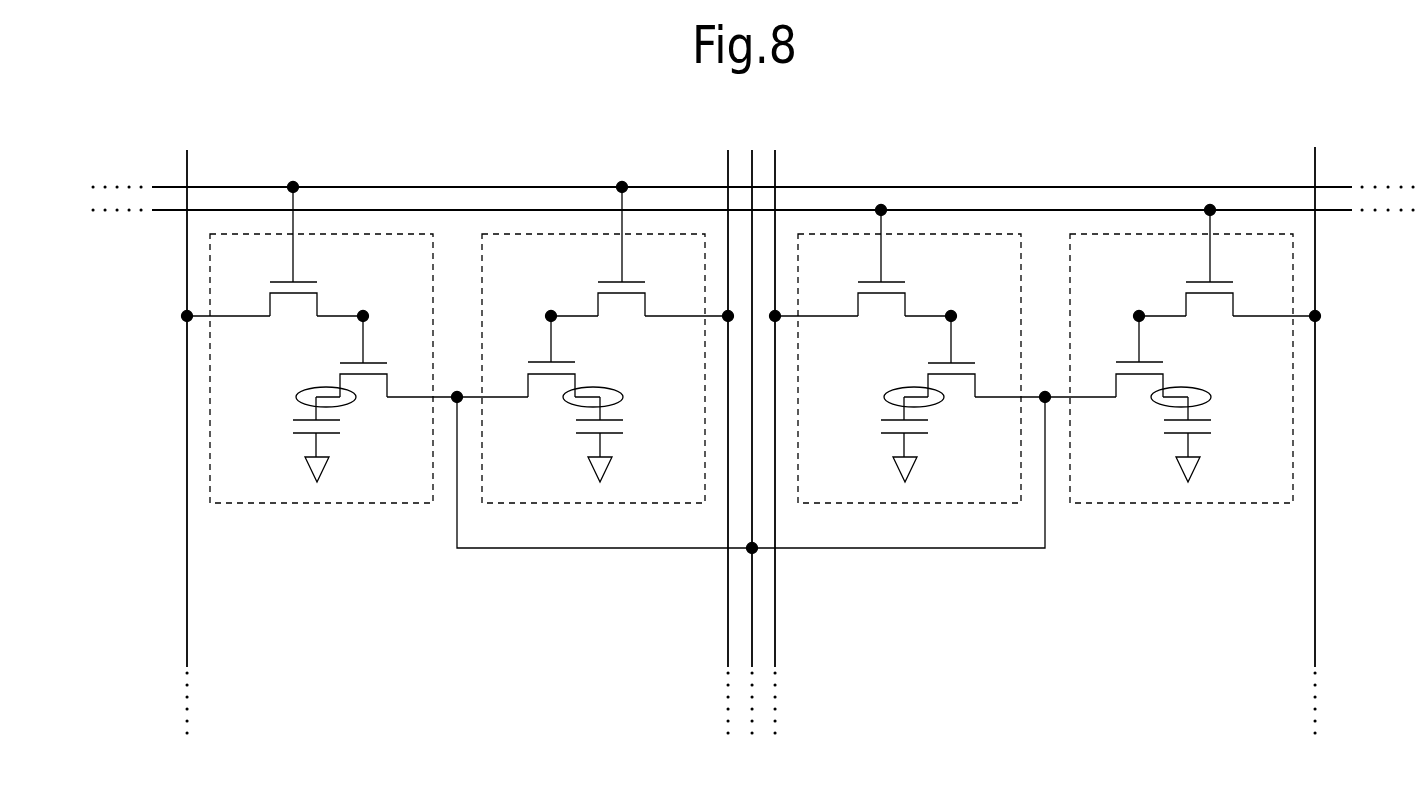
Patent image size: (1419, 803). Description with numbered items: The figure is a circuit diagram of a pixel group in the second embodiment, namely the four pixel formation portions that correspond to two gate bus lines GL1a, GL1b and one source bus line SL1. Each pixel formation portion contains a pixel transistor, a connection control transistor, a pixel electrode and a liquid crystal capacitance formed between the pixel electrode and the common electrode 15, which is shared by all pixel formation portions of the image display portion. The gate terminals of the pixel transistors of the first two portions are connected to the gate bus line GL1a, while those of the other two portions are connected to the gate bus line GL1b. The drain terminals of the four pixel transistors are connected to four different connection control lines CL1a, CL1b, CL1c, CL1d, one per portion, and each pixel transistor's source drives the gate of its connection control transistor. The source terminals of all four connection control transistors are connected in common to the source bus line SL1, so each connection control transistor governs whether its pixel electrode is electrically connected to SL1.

The gate bus line GL1a is at (400, 185).
The gate bus line GL1b is at (475, 208).
The connection control line CL1a is at (189, 632).
The connection control line CL1b is at (727, 632).
The connection control line CL1c is at (778, 632).
The connection control line CL1d is at (1318, 632).
The source bus line SL1 is at (755, 585).
The common electrode 15 is at (328, 474).